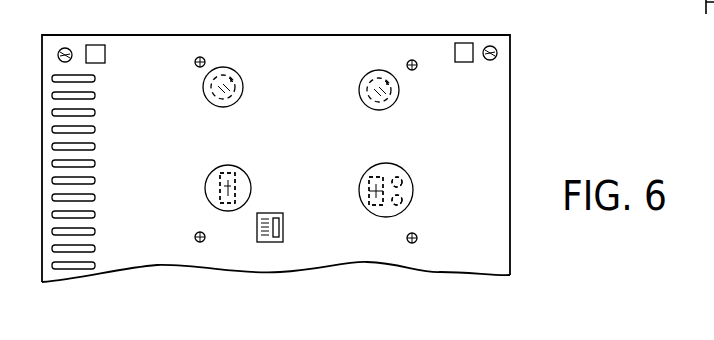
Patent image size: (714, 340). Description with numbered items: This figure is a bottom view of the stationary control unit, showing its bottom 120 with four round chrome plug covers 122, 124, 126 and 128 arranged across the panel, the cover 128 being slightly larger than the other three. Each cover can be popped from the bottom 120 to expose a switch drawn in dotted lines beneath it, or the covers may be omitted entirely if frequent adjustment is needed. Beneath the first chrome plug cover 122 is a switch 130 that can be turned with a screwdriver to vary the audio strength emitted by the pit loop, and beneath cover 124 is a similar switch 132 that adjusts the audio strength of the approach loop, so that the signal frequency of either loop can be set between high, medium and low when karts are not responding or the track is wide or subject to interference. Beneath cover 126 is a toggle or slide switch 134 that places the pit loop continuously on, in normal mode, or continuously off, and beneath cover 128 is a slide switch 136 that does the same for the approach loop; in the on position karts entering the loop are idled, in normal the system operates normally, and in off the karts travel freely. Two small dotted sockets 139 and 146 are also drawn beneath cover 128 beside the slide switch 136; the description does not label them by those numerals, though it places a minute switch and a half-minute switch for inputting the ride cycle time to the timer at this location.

The bottom 120 is at (161, 247).
The chrome plug cover 122 is at (203, 90).
The chrome plug cover 124 is at (399, 93).
The chrome plug cover 126 is at (205, 188).
The chrome plug cover 128 is at (408, 188).
The switch 130 is at (236, 72).
The switch 132 is at (380, 70).
The slide switch 134 is at (232, 178).
The slide switch 136 is at (375, 183).
The contact socket 139 is at (400, 177).
The contact socket 146 is at (405, 205).